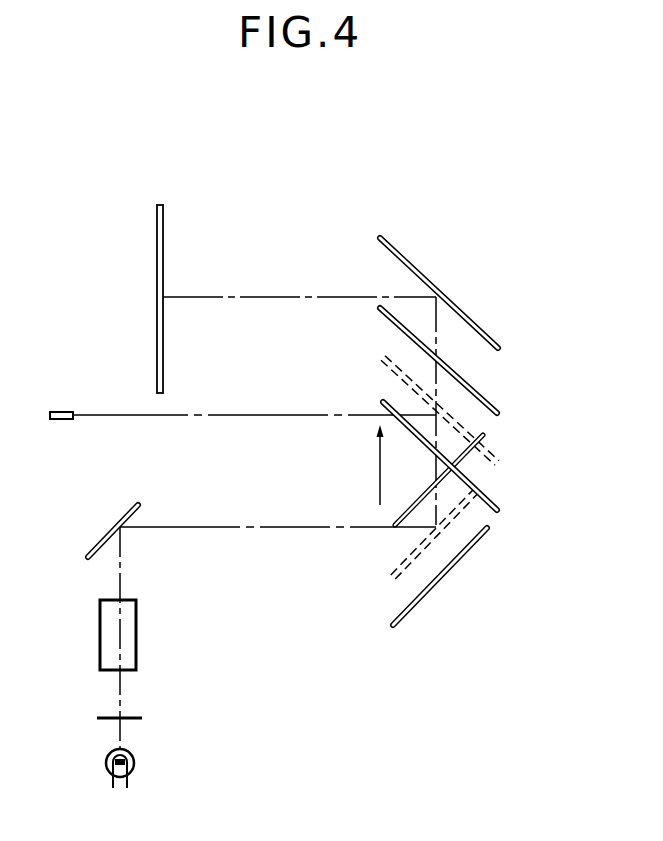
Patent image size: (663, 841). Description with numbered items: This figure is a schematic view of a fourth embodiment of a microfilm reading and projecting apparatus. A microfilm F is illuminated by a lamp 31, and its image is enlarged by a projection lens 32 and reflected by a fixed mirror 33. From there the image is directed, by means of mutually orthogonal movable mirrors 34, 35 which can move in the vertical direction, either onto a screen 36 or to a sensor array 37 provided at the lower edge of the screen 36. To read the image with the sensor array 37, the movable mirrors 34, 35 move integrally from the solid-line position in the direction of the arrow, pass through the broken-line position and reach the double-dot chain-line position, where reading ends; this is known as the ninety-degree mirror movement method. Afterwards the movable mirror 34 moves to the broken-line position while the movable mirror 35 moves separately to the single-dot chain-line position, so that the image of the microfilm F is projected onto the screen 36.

The lamp 31 is at (134, 763).
The projection lens 32 is at (137, 640).
The fixed mirror 33 is at (123, 505).
The movable mirror 34 is at (442, 578).
The movable mirror 35 is at (497, 507).
The screen 36 is at (160, 204).
The sensor array 37 is at (63, 411).
The microfilm F is at (132, 716).